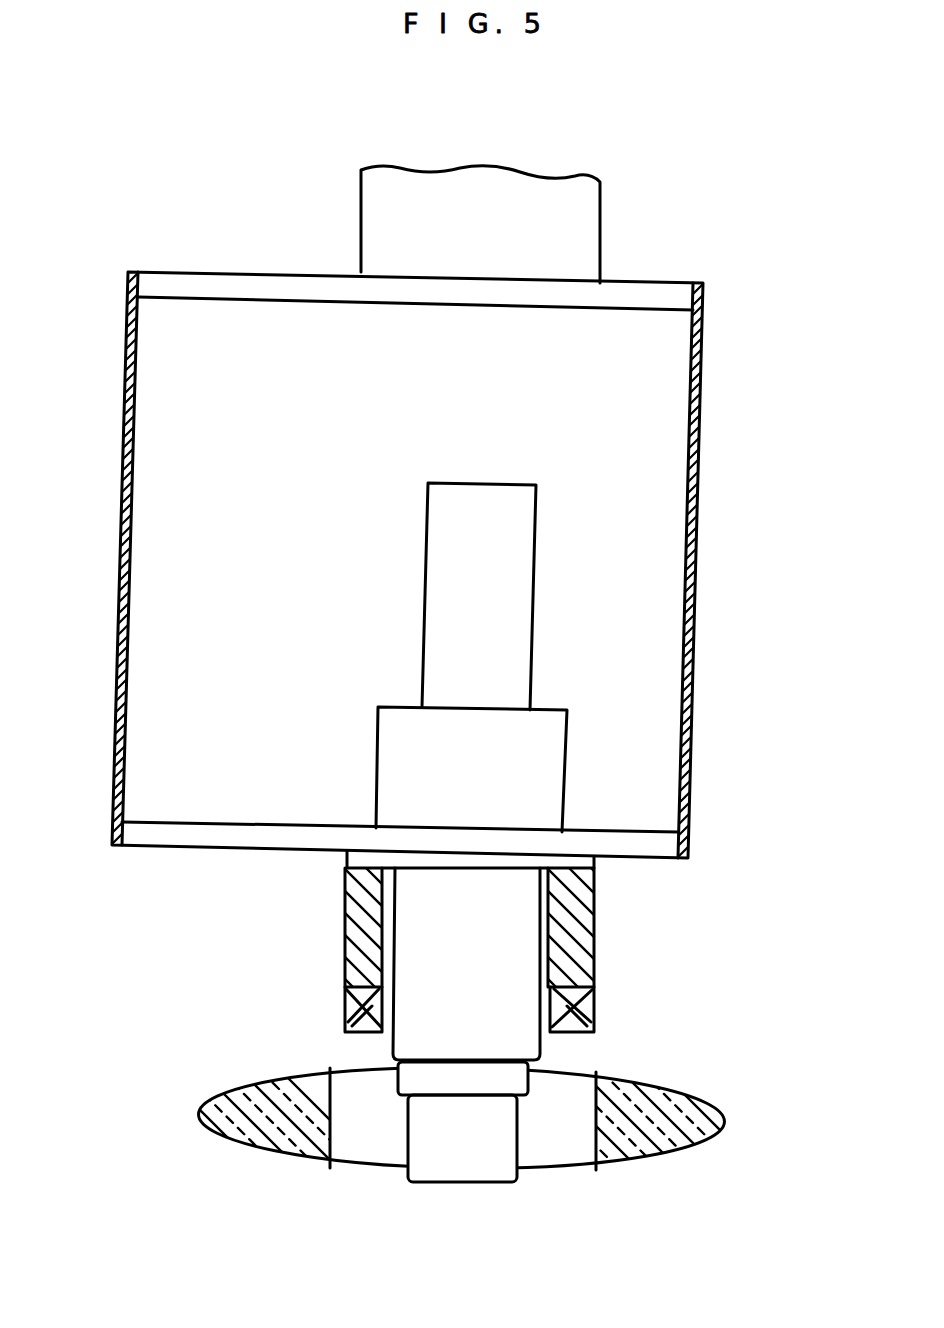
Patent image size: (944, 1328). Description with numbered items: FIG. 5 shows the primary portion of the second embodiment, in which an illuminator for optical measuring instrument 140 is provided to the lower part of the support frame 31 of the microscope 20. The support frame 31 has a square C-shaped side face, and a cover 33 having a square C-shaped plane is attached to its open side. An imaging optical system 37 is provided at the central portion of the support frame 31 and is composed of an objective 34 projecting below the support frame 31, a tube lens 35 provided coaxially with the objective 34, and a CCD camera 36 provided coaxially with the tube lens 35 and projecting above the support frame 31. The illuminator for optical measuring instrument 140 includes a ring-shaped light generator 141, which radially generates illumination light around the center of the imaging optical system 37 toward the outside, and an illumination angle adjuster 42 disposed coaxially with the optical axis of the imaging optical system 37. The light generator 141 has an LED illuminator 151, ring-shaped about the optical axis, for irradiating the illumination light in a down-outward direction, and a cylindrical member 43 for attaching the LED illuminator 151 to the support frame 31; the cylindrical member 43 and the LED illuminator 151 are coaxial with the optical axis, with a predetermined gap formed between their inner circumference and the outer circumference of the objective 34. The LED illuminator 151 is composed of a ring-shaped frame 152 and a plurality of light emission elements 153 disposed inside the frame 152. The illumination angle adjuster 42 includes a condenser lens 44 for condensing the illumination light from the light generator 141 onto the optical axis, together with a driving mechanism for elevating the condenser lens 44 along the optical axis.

The microscope 20 is at (121, 318).
The support frame 31 is at (672, 293).
The cover 33 is at (697, 448).
The objective 34 is at (521, 1160).
The tube lens 35 is at (515, 565).
The CCD camera 36 is at (585, 217).
The imaging optical system 37 is at (567, 457).
The illumination angle adjuster 42 is at (204, 1090).
The cylindrical member 43 is at (347, 928).
The condenser lens 44 is at (668, 1169).
The illuminator for optical measuring instrument 140 is at (176, 926).
The light generator 141 is at (227, 924).
The LED illuminator 151 is at (339, 1005).
The frame 152 is at (594, 1004).
The light emission element 153 is at (348, 1028).